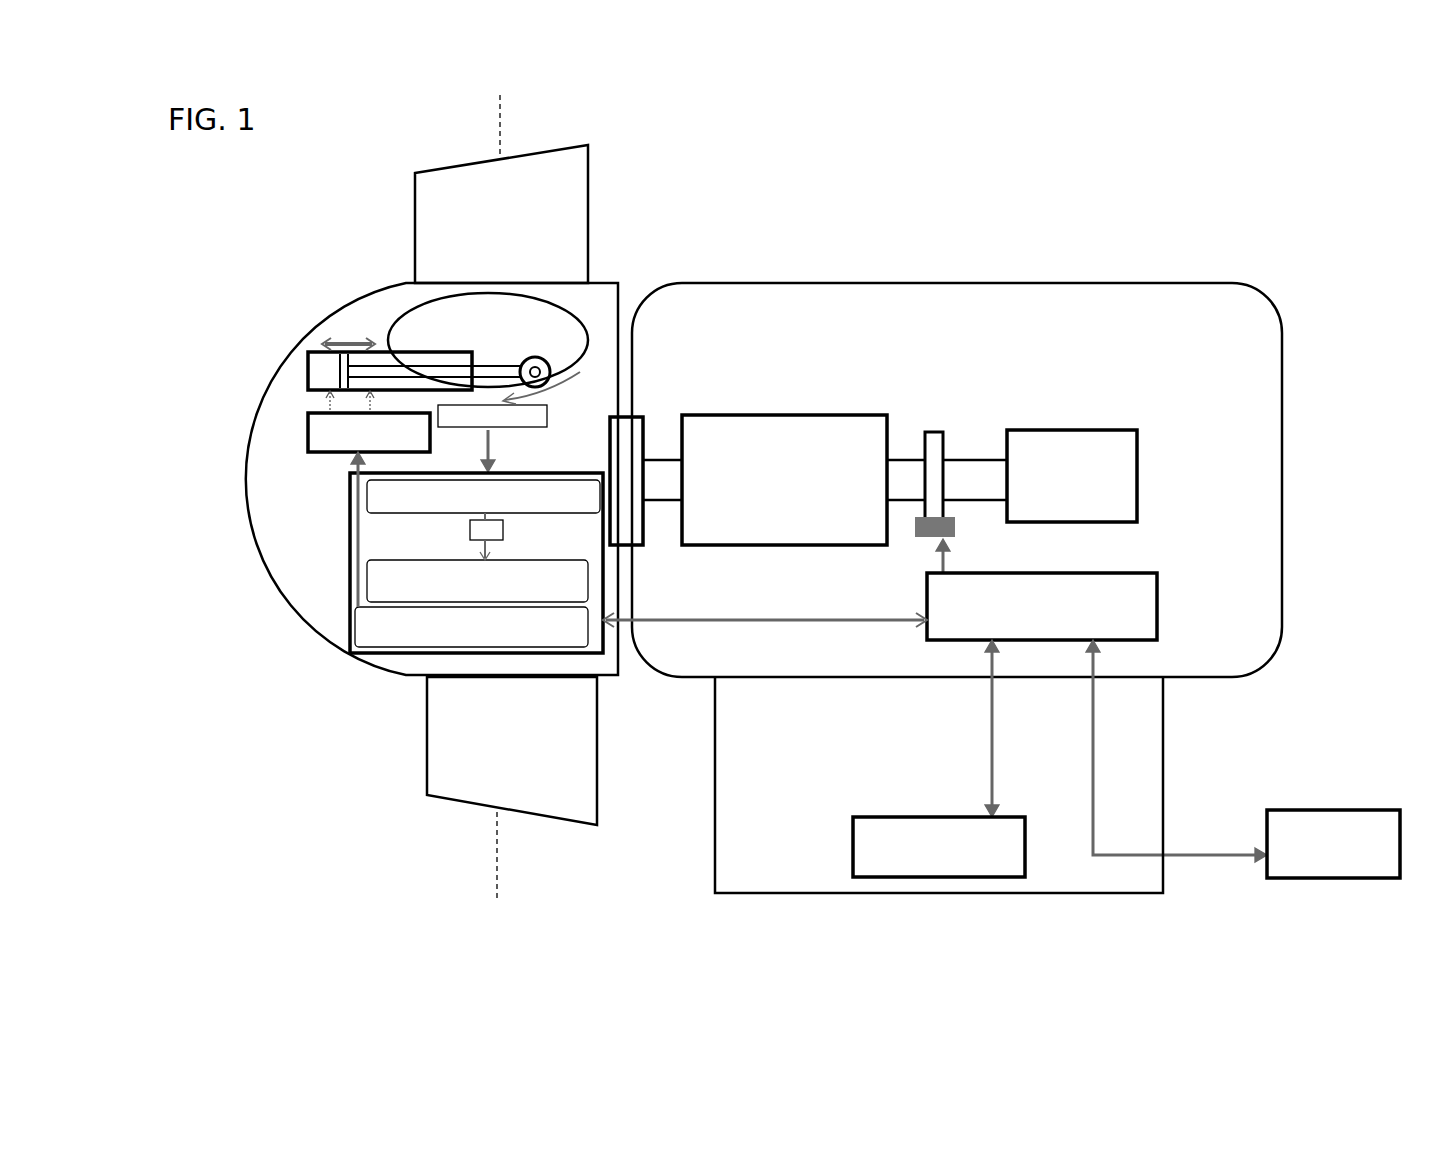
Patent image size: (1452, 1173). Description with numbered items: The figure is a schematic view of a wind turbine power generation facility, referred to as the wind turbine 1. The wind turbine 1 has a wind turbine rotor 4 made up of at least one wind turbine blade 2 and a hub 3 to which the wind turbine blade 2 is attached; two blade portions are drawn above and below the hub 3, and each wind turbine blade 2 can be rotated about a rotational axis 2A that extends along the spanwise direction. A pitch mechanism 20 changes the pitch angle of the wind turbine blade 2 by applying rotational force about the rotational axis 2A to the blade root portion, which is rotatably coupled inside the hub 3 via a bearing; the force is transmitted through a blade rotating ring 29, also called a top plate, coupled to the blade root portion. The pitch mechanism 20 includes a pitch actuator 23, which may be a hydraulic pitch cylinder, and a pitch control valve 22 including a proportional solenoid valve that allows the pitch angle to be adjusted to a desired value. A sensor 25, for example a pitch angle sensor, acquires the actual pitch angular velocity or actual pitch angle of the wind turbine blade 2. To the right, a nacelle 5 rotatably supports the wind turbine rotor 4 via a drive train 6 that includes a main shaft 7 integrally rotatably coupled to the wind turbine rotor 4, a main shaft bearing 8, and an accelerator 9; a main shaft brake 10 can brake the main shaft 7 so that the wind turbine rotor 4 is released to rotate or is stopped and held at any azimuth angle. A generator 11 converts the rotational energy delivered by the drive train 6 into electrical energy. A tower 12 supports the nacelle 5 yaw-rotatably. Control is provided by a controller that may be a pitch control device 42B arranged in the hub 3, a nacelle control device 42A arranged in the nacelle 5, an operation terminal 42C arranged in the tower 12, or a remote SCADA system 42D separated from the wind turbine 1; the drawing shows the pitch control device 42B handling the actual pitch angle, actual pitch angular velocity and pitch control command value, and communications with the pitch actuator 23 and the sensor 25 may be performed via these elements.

The wind turbine 1 is at (833, 185).
The wind turbine blade 2 is at (415, 205).
The rotational axis 2A is at (498, 503).
The hub 3 is at (385, 285).
The wind turbine rotor 4 is at (330, 150).
The nacelle 5 is at (1167, 283).
The drive train 6 is at (800, 346).
The main shaft 7 is at (670, 458).
The main shaft bearing 8 is at (643, 417).
The accelerator 9 is at (765, 415).
The main shaft brake 10 is at (957, 527).
The generator 11 is at (1055, 430).
The tower 12 is at (715, 877).
The pitch mechanism 20 is at (225, 318).
The pitch control valve 22 is at (308, 428).
The pitch actuator 23 is at (308, 367).
The sensor 25 is at (537, 430).
The blade rotating ring 29 is at (590, 318).
The nacelle control device 42A is at (1157, 590).
The pitch control device 42B is at (350, 578).
The operation terminal 42C is at (960, 878).
The remote SCADA 42D is at (1313, 880).